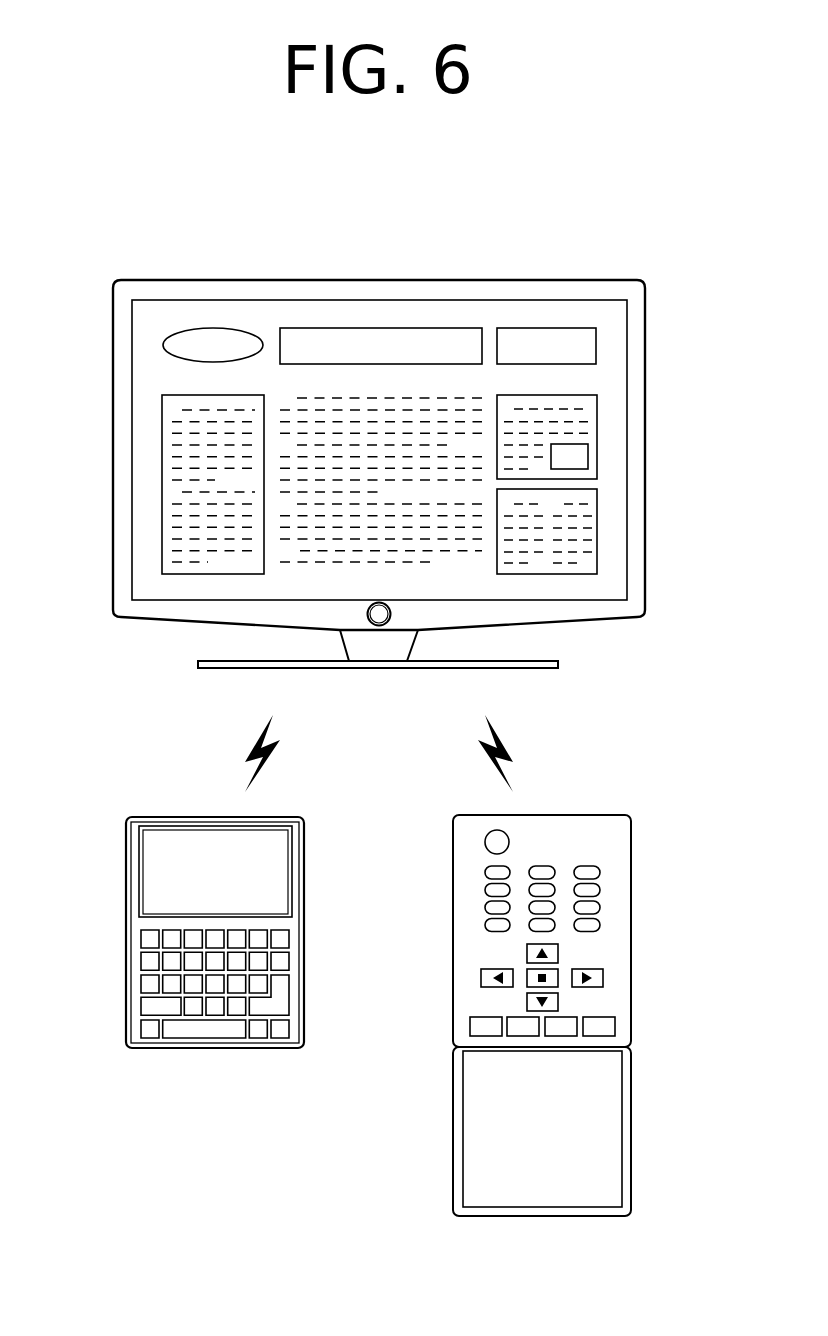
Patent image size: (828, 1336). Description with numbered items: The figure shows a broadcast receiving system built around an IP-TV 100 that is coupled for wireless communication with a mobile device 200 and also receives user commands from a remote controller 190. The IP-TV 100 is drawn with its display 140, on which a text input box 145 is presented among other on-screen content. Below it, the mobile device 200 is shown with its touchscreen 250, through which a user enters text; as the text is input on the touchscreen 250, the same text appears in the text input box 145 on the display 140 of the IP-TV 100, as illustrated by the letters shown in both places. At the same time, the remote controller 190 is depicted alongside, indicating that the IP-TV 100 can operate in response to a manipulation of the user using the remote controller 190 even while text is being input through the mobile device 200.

The IP-TV 100 is at (313, 280).
The display 140 is at (551, 300).
The text input box 145 is at (441, 328).
The remote controller 190 is at (592, 815).
The mobile device 200 is at (165, 817).
The touchscreen 250 is at (135, 868).